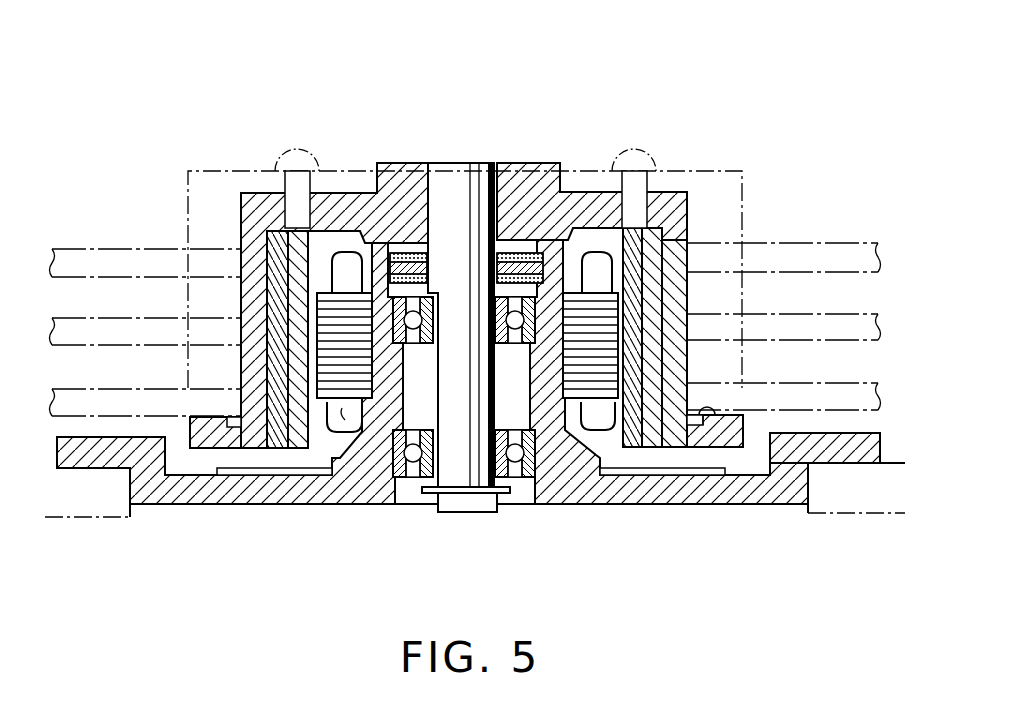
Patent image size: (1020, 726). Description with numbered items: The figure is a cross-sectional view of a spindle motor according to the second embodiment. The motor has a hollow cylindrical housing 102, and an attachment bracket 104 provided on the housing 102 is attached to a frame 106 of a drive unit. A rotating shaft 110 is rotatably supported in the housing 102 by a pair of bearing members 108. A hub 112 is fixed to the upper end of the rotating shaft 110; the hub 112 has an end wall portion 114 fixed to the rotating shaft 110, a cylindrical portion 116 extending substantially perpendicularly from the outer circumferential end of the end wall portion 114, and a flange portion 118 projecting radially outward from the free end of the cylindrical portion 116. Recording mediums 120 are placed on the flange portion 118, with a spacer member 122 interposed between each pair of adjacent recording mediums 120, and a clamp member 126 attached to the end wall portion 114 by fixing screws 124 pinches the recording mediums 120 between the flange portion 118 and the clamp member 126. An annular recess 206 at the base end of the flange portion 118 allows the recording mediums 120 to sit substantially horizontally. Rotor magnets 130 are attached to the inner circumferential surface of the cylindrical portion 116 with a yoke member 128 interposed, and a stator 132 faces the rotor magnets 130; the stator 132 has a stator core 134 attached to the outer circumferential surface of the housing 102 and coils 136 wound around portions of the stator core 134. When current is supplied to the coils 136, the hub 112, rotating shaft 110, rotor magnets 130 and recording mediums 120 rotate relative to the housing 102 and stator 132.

The housing 102 is at (550, 405).
The attachment bracket 104 is at (800, 448).
The frame 106 is at (872, 515).
The bearing members 108 is at (528, 252).
The rotating shaft 110 is at (455, 475).
The hub 112 is at (598, 188).
The end wall portion 114 is at (352, 202).
The cylindrical portion 116 is at (677, 298).
The flange portion 118 is at (735, 440).
The recording mediums 120 is at (81, 246).
The spacer member 122 is at (166, 285).
The fixing screws 124 is at (300, 152).
The clamp member 126 is at (232, 170).
The yoke member 128 is at (190, 452).
The rotor magnets 130 is at (292, 288).
The stator 132 is at (611, 443).
The stator core 134 is at (333, 365).
The coils 136 is at (341, 430).
The annular recess 206 is at (706, 422).